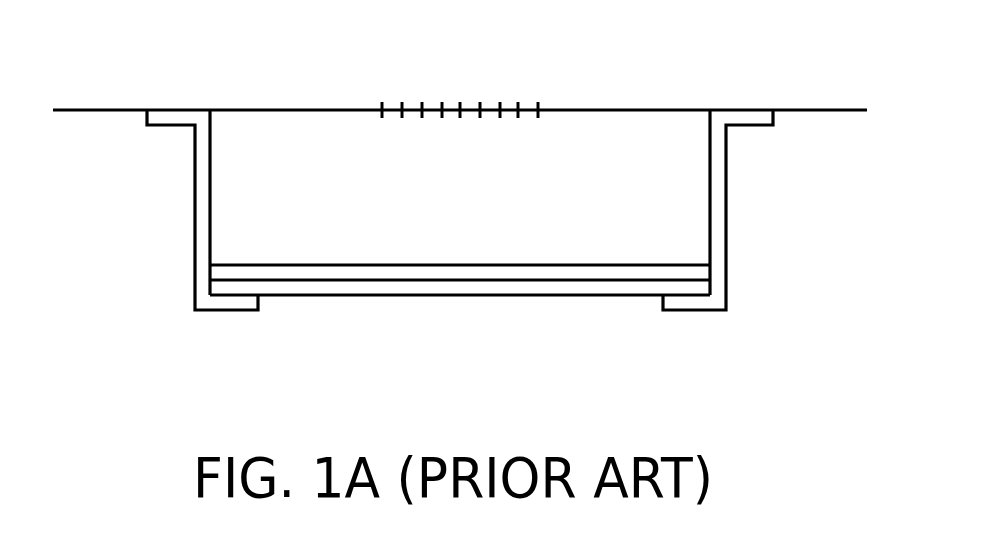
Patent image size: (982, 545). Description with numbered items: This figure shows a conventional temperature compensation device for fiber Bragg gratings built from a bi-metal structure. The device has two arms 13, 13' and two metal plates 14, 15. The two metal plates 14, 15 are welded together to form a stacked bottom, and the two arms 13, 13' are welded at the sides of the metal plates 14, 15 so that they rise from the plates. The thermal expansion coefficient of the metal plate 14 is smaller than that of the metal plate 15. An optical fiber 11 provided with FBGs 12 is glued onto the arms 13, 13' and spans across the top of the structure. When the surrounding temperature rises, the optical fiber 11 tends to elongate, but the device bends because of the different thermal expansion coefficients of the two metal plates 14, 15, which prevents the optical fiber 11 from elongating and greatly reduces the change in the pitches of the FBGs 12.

The optical fiber 11 is at (617, 108).
The FBGs 12 is at (460, 100).
The arm 13 is at (178, 210).
The arm 13' is at (746, 210).
The metal plate 14 is at (511, 270).
The metal plate 15 is at (420, 288).